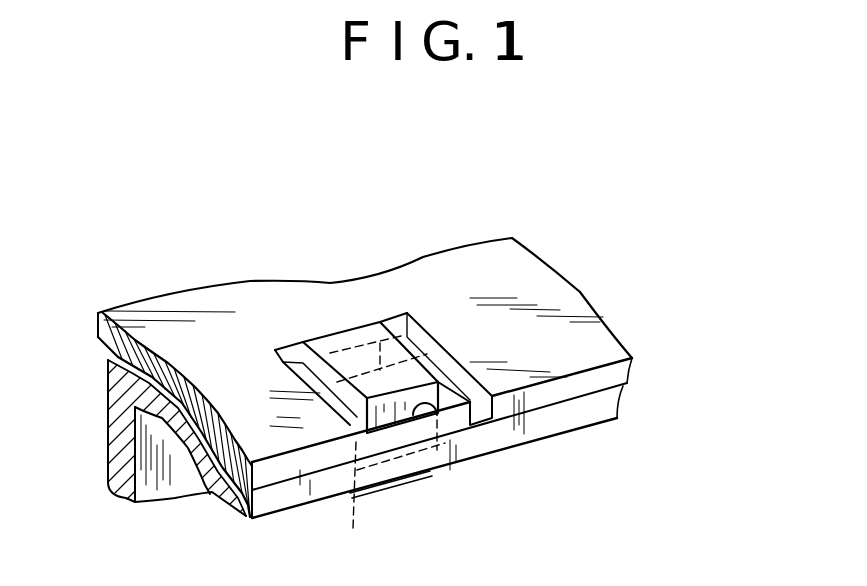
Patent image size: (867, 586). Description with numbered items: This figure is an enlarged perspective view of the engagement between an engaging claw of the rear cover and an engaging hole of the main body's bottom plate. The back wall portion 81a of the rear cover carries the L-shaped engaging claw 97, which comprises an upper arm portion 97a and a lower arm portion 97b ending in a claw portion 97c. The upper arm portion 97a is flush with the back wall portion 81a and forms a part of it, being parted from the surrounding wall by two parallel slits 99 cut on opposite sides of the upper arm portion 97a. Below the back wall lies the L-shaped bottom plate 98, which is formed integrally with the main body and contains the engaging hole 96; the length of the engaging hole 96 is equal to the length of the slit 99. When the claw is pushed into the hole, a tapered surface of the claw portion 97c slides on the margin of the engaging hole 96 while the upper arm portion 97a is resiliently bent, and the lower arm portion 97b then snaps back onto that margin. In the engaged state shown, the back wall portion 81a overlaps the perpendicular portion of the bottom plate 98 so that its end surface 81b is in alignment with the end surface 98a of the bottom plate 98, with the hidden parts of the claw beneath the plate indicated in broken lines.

The back wall portion 81a is at (540, 287).
The end surface 81b is at (613, 377).
The bottom plate 98 is at (118, 433).
The end surface 98a is at (608, 410).
The slits 99 is at (293, 347).
The engaging claw 97 is at (410, 486).
The upper arm portion 97a is at (380, 372).
The lower arm portion 97b is at (400, 425).
The claw portion 97c is at (335, 506).
The engaging hole 96 is at (445, 425).